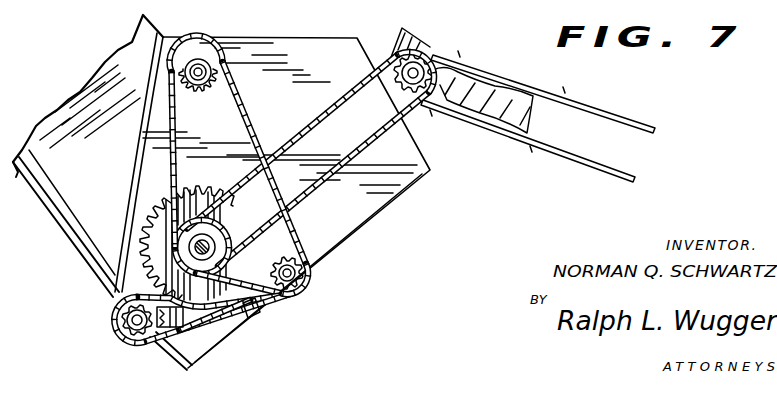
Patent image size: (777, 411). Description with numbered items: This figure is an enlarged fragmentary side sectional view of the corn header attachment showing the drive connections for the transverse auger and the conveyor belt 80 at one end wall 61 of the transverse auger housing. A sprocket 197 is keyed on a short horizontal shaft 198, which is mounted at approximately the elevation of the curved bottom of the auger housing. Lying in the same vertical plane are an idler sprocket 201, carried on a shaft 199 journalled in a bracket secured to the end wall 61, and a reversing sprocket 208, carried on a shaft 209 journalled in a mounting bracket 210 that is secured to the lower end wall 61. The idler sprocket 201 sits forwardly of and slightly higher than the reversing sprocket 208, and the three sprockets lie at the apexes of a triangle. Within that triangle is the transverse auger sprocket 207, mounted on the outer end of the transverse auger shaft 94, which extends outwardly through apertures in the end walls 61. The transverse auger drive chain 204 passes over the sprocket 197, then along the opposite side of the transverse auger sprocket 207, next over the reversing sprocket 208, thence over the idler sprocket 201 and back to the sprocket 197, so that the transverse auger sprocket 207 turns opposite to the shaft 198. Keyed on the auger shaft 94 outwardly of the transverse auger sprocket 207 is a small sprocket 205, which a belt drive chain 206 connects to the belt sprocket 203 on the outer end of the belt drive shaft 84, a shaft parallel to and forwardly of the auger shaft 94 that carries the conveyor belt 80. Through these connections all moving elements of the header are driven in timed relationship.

The end wall 61 is at (303, 58).
The conveyor belt 80 is at (598, 108).
The belt drive shaft 84 is at (433, 52).
The transverse auger shaft 94 is at (198, 244).
The sprocket 197 is at (203, 60).
The short horizontal shaft 198 is at (222, 80).
The shaft 199 is at (312, 268).
The idler sprocket 201 is at (311, 284).
The belt sprocket 203 is at (465, 93).
The transverse auger drive chain 204 is at (255, 126).
The small sprocket 205 is at (262, 320).
The belt drive chain 206 is at (343, 101).
The transverse auger sprocket 207 is at (287, 222).
The reversing sprocket 208 is at (124, 332).
The shaft 209 is at (110, 311).
The mounting bracket 210 is at (165, 334).